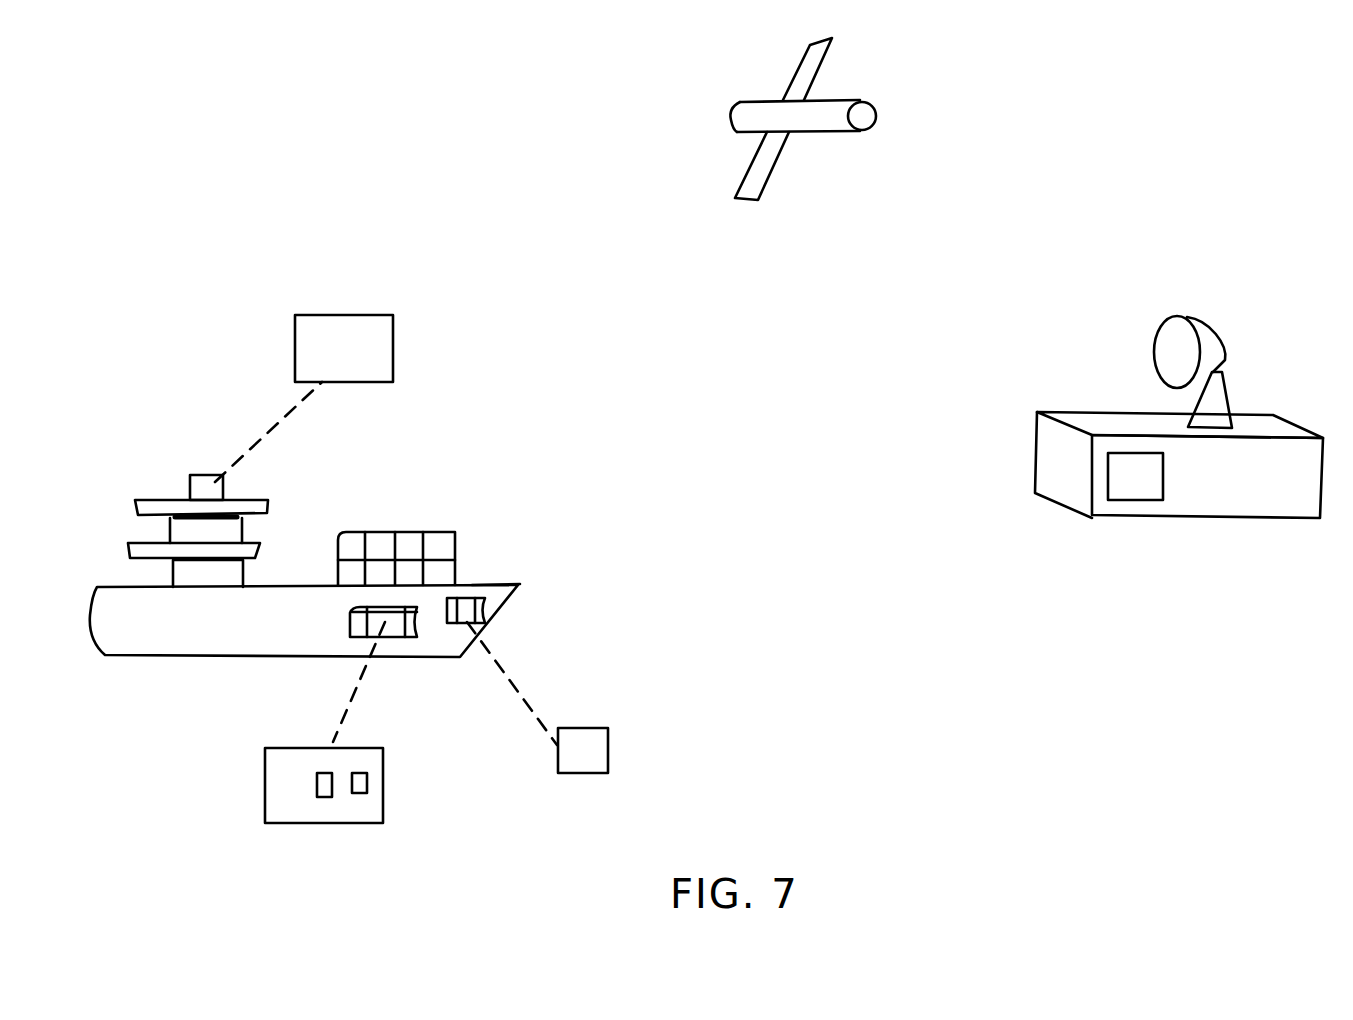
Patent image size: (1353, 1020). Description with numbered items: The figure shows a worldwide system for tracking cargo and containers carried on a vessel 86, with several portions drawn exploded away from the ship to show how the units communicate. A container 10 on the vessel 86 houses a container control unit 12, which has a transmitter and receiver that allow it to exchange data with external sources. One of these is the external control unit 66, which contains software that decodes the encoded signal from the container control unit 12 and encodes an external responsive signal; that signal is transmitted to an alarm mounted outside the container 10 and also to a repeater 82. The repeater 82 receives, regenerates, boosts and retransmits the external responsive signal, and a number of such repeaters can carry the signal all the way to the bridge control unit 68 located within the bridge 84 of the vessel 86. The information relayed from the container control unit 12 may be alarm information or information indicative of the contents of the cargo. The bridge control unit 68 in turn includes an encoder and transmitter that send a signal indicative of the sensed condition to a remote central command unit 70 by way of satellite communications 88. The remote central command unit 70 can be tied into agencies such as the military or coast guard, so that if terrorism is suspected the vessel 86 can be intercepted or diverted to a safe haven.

The container 10 is at (333, 822).
The container control unit 12 is at (328, 795).
The external control unit 66 is at (383, 792).
The bridge control unit 68 is at (365, 382).
The remote central command unit 70 is at (1135, 502).
The repeater 82 is at (572, 775).
The bridge 84 is at (190, 480).
The vessel 86 is at (165, 655).
The satellite communications 88 is at (815, 135).